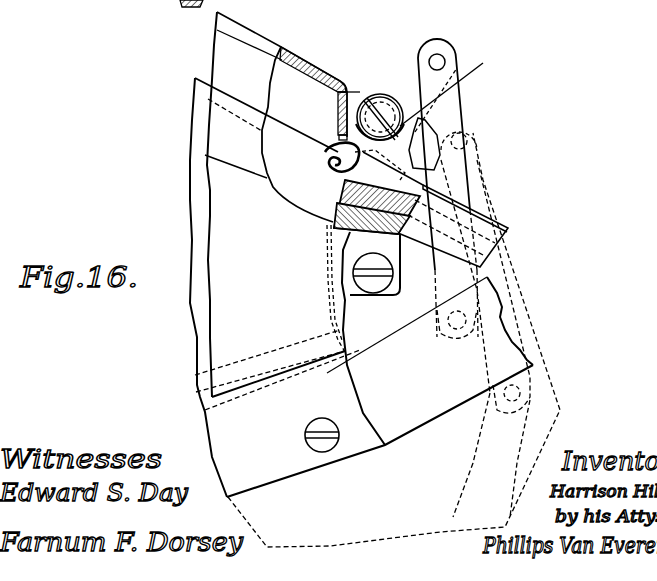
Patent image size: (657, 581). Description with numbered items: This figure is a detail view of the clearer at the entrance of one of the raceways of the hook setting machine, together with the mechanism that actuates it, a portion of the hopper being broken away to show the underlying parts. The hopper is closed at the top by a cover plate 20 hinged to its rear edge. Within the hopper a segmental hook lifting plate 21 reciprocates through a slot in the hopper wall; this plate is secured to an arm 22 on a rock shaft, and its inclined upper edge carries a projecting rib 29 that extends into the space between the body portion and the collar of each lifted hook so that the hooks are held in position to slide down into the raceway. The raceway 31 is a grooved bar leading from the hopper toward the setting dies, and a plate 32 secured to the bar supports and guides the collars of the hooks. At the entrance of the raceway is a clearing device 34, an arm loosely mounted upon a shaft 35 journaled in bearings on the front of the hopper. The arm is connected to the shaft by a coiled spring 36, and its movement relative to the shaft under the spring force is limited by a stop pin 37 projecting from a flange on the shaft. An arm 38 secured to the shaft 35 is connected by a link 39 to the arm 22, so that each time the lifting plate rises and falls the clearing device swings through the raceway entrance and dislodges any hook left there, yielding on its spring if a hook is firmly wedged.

The cover plate 20 is at (256, 37).
The hook lifting plate 21 is at (185, 2).
The arm 22 is at (385, 343).
The projecting rib 29 is at (298, 116).
The raceway 31 is at (483, 243).
The plate 32 is at (493, 224).
The clearing device 34 is at (437, 130).
The shaft 35 is at (363, 92).
The coiled spring 36 is at (385, 93).
The stop pin 37 is at (446, 87).
The arm 38 is at (407, 68).
The link 39 is at (457, 173).